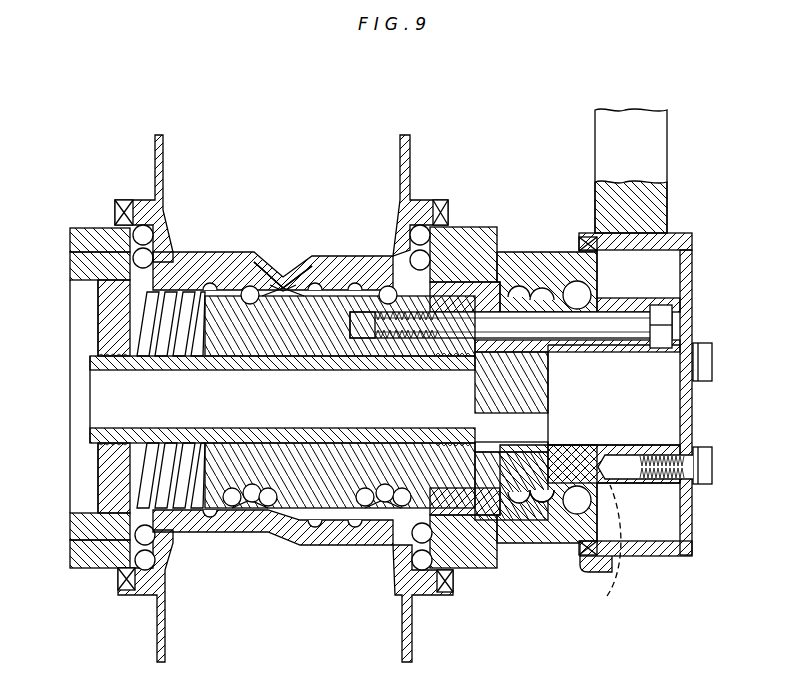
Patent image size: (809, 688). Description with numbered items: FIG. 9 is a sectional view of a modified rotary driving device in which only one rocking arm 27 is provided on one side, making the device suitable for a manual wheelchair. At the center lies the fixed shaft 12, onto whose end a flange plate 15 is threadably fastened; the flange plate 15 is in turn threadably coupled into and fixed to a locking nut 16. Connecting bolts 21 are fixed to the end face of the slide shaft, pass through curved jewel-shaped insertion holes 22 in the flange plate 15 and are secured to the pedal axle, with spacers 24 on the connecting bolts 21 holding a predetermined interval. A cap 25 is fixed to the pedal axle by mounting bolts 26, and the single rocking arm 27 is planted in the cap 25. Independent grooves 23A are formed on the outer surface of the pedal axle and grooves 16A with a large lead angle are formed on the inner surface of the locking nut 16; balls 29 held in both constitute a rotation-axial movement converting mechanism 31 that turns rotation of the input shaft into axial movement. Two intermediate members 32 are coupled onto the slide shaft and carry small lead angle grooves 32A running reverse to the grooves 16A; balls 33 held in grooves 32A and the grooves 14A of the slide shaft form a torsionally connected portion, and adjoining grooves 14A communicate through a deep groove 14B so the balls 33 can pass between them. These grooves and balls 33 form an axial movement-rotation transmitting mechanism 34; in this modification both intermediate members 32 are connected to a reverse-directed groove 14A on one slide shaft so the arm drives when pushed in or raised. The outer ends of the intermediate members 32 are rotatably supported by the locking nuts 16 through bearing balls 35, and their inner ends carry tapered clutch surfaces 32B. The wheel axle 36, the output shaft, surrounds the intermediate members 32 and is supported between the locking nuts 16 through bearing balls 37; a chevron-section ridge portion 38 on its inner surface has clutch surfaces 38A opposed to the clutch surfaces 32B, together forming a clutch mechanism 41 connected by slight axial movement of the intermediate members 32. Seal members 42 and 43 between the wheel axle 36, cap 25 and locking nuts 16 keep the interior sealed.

The fixed shaft 12 is at (134, 430).
The groove 14A is at (243, 290).
The deep groove 14B is at (263, 488).
The flange plate 15 is at (107, 470).
The locking nut 16 is at (80, 233).
The groove 16A is at (523, 288).
The connecting bolt 21 is at (613, 332).
The insertion hole 22 is at (470, 290).
The groove 23A is at (602, 552).
The spacer 24 is at (519, 283).
The cap 25 is at (692, 414).
The mounting bolt 26 is at (712, 364).
The rocking arm 27 is at (655, 165).
The ball 29 is at (578, 292).
The rotation-axial movement converting mechanism 31 is at (515, 616).
The intermediate member 32 is at (197, 255).
The groove 32A is at (213, 252).
The tapered clutch surface 32B is at (294, 268).
The ball 33 is at (258, 290).
The axial movement-rotation transmitting mechanism 34 is at (300, 152).
The bearing ball 35 is at (80, 256).
The wheel axle 36 is at (160, 192).
The bearing ball 37 is at (118, 232).
The ridge portion 38 is at (283, 300).
The clutch surface 38A is at (284, 280).
The clutch mechanism 41 is at (340, 204).
The seal member 42 is at (125, 210).
The seal member 43 is at (578, 238).